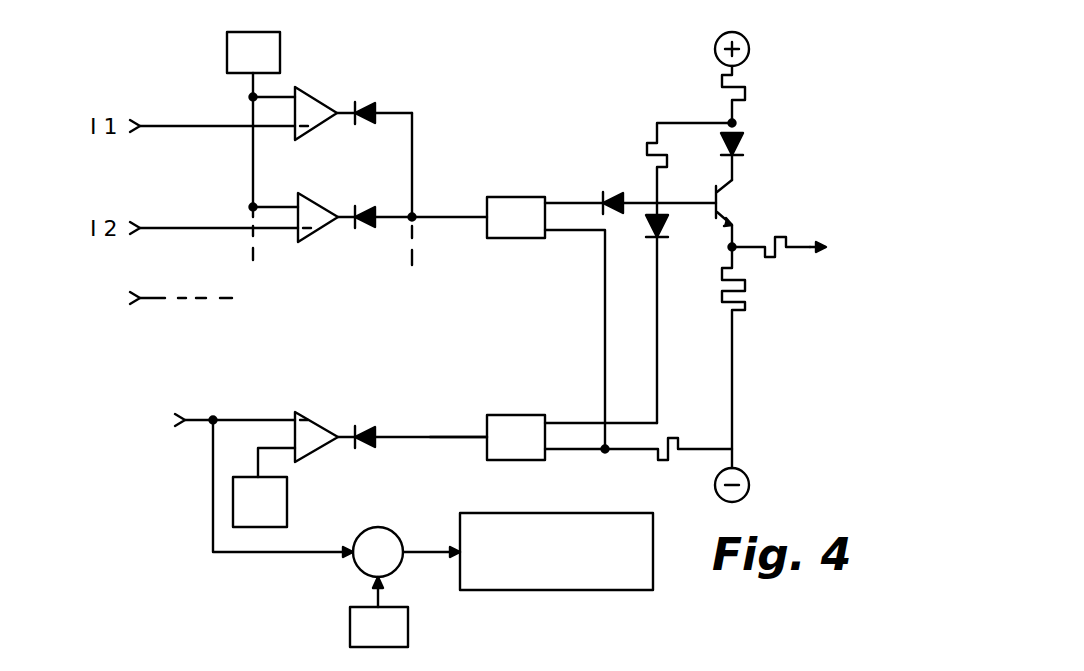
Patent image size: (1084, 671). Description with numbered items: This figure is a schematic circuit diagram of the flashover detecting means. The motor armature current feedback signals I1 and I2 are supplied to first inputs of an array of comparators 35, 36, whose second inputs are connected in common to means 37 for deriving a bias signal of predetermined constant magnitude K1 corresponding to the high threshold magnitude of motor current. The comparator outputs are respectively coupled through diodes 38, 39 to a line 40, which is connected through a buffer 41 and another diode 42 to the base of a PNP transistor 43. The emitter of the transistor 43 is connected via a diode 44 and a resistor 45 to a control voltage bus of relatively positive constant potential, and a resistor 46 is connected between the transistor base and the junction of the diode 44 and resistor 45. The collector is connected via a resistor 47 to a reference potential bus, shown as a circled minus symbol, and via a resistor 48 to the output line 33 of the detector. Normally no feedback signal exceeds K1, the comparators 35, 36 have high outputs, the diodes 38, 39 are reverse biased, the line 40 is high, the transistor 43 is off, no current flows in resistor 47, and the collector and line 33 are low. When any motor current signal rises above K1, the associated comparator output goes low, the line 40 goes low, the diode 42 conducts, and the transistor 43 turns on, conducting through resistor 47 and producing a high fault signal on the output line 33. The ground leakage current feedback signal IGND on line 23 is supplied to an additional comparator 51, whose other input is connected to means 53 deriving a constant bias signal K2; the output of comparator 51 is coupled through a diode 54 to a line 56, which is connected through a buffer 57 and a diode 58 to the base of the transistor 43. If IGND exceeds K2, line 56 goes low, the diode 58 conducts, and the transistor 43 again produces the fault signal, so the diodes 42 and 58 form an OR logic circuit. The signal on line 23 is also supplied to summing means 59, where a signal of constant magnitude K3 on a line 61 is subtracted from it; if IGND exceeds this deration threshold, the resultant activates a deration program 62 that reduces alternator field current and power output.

The line 23 is at (193, 420).
The output line 33 is at (806, 245).
The comparator 35 is at (318, 87).
The comparator 36 is at (318, 193).
The means for deriving a bias signal 37 is at (280, 46).
The diode 38 is at (357, 101).
The diode 39 is at (358, 205).
The line 40 is at (445, 218).
The buffer 41 is at (512, 197).
The diode 42 is at (607, 194).
The PNP transistor 43 is at (722, 186).
The diode 44 is at (744, 145).
The resistor 45 is at (745, 85).
The resistor 46 is at (640, 157).
The resistor 47 is at (722, 300).
The resistor 48 is at (783, 258).
The comparator 51 is at (316, 450).
The means for deriving a bias signal 53 is at (287, 495).
The diode 54 is at (357, 428).
The line 56 is at (460, 438).
The buffer 57 is at (510, 415).
The diode 58 is at (665, 234).
The summing means 59 is at (385, 527).
The line 61 is at (382, 597).
The deration program 62 is at (567, 590).